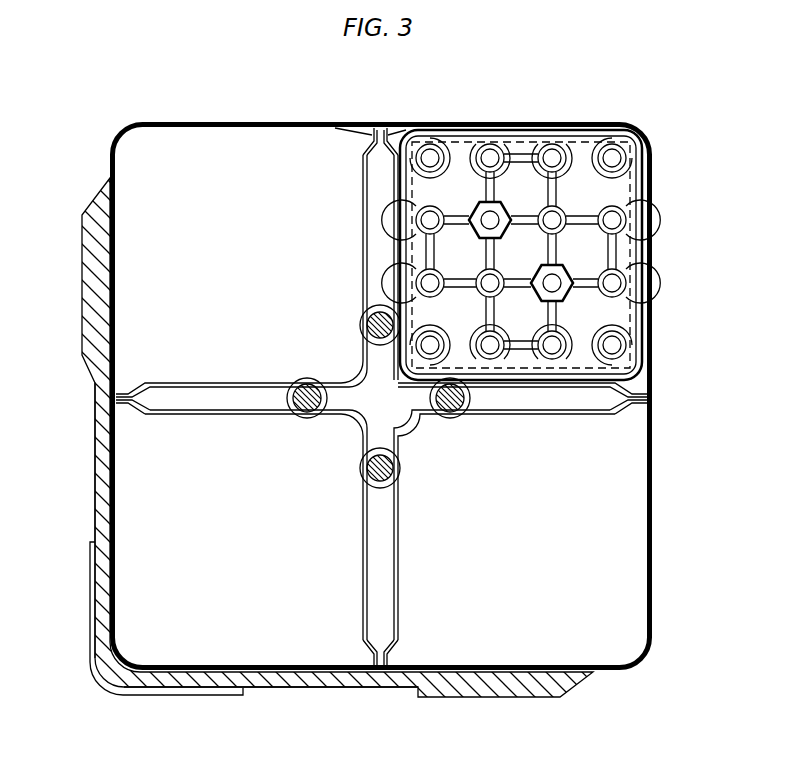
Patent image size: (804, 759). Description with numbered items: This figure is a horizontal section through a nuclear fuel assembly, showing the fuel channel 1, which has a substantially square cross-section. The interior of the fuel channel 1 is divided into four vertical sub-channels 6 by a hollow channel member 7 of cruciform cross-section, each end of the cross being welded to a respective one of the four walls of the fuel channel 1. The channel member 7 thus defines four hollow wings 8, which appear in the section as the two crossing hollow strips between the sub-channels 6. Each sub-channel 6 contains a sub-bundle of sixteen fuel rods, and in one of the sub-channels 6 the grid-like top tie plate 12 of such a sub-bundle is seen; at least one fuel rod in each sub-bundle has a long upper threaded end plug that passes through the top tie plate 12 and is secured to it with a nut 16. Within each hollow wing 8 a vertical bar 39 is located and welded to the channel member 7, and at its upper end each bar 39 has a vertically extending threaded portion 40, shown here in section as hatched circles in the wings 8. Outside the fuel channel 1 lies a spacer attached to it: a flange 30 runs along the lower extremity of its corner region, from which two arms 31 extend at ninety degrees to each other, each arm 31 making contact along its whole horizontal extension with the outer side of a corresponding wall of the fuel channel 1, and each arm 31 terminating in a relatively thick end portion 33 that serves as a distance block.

The fuel channel 1 is at (653, 472).
The vertical sub-channel 6 is at (595, 589).
The hollow channel member 7 is at (357, 366).
The hollow wing 8 is at (208, 402).
The top tie plate 12 is at (437, 145).
The nut 16 is at (628, 255).
The flange 30 is at (190, 693).
The arm 31 is at (103, 467).
The end portion 33 is at (95, 263).
The vertical bar 39 is at (301, 412).
The threaded portion 40 is at (365, 317).